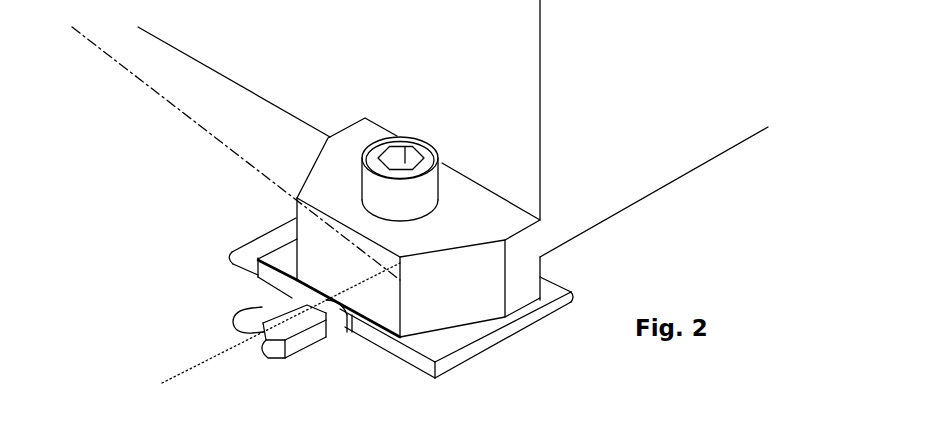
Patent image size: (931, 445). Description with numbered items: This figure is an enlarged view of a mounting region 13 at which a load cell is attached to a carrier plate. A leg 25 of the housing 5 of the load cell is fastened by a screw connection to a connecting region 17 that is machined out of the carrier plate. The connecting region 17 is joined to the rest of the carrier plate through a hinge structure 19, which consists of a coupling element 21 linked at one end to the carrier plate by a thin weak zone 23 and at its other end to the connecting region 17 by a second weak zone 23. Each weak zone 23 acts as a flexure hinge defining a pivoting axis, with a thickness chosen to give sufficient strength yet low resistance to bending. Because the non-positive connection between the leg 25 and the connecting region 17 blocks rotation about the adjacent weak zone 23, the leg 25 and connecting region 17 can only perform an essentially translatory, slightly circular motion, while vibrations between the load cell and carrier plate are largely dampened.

The housing 5 is at (635, 177).
The mounting region 13 is at (526, 358).
The connecting region 17 is at (268, 256).
The hinge structure 19 is at (322, 375).
The coupling element 21 is at (262, 325).
The weak zone 23 is at (239, 333).
The leg 25 is at (307, 188).